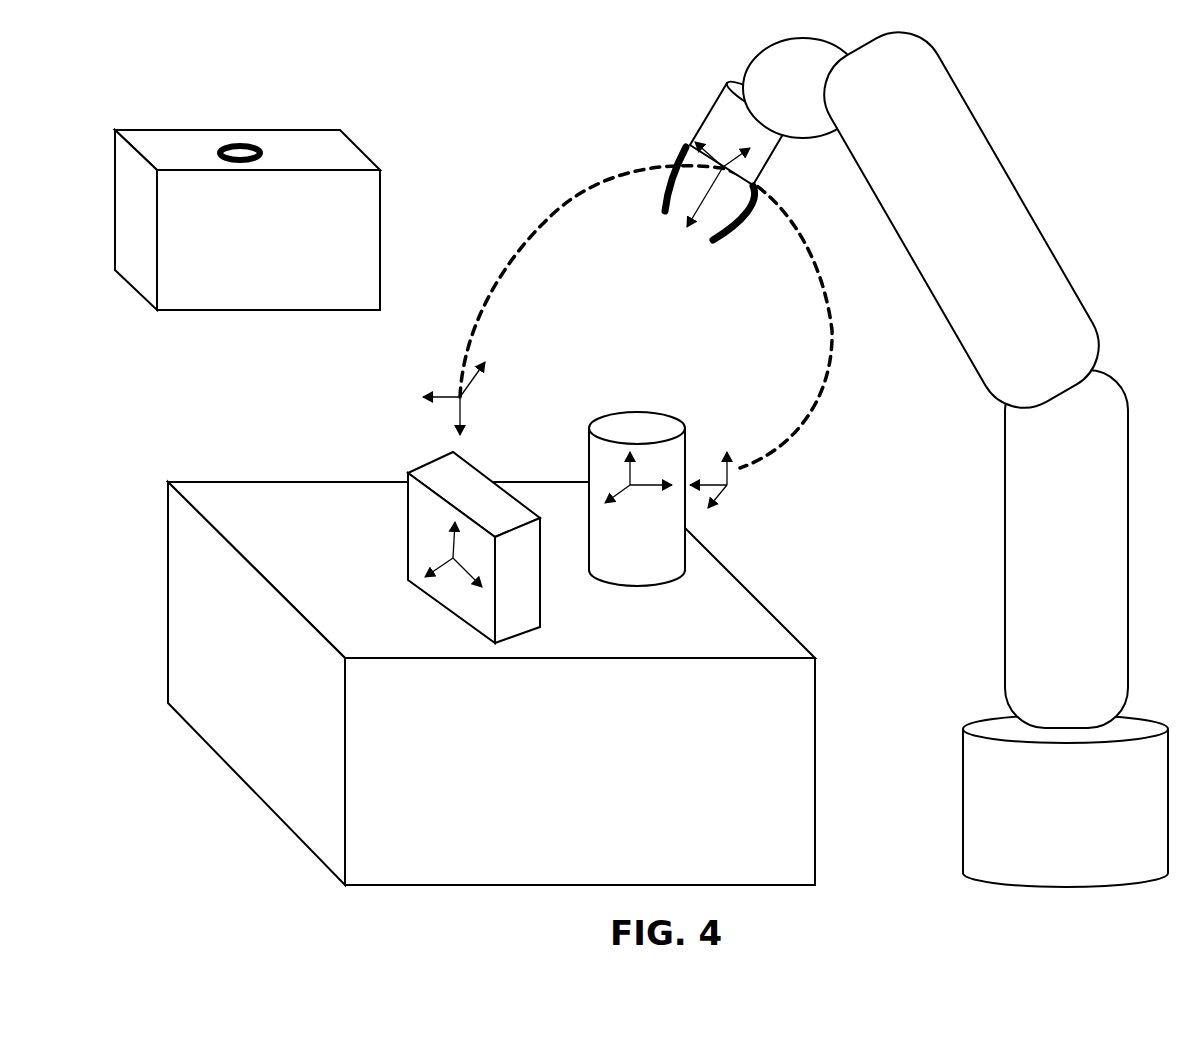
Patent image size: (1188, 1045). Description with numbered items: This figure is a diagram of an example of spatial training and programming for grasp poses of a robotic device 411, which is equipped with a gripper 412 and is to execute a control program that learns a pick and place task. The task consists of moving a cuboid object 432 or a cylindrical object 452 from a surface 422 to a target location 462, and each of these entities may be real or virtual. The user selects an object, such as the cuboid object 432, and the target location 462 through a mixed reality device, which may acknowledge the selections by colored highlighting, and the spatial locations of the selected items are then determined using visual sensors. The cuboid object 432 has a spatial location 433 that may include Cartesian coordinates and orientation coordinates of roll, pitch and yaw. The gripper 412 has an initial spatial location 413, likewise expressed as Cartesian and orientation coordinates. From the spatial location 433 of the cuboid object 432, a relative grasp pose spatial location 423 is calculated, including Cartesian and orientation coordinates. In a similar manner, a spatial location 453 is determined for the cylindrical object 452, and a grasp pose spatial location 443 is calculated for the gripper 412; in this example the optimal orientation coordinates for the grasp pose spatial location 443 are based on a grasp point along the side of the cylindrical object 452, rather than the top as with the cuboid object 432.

The robotic device 411 is at (890, 451).
The gripper 412 is at (662, 223).
The initial spatial location 413 is at (703, 128).
The surface 422 is at (275, 478).
The grasp pose spatial location 423 is at (442, 382).
The cuboid object 432 is at (432, 467).
The spatial location 433 is at (428, 537).
The grasp pose spatial location 443 is at (762, 477).
The cylindrical object 452 is at (620, 410).
The spatial location 453 is at (658, 467).
The target location 462 is at (238, 146).